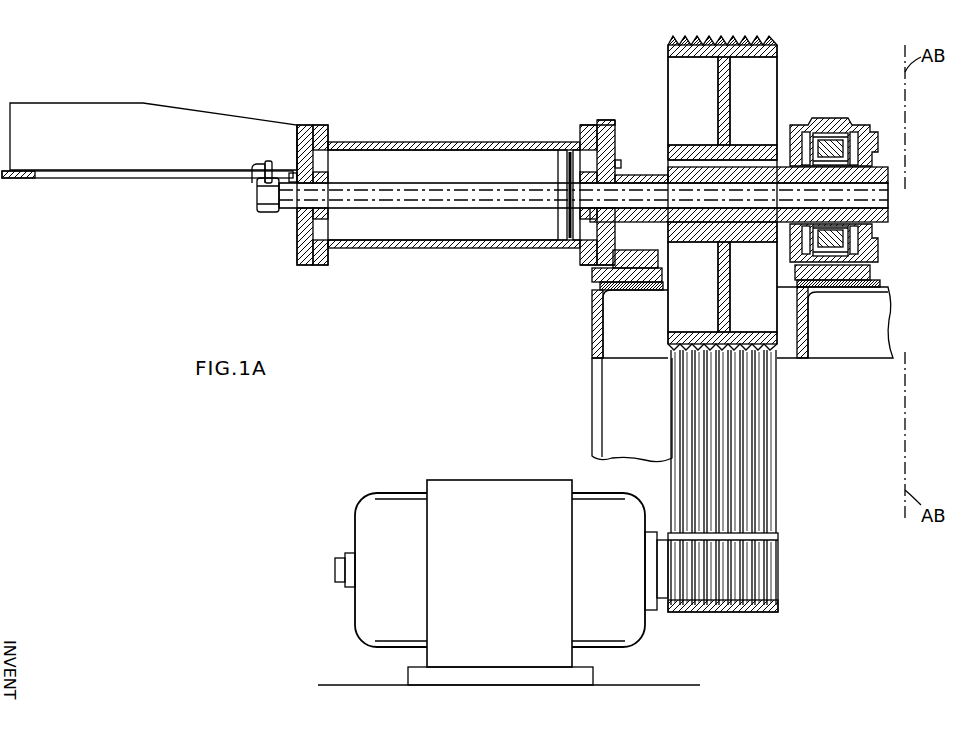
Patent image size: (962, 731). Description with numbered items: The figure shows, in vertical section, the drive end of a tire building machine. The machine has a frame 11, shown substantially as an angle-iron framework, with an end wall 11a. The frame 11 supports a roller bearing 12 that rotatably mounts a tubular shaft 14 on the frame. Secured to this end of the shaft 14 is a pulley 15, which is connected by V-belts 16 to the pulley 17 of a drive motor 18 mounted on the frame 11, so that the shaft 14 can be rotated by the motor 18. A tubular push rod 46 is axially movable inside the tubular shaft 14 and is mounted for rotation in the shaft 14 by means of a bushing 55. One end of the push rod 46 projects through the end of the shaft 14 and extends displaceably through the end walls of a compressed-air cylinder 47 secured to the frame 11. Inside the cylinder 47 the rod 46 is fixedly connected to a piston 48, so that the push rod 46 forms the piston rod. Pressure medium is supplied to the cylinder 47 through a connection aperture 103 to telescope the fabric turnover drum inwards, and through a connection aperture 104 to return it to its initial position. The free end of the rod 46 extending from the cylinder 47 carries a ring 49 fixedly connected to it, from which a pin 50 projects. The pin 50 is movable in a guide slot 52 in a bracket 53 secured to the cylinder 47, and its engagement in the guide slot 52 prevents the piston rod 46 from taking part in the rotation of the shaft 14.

The frame 11 is at (827, 348).
The end wall 11a is at (592, 390).
The roller bearing 12 is at (851, 123).
The tubular shaft 14 is at (884, 167).
The pulley 15 is at (680, 90).
The V-belts 16 is at (778, 452).
The pulley 17 is at (778, 563).
The drive motor 18 is at (453, 497).
The tubular push rod 46 is at (289, 212).
The compressed-air cylinder 47 is at (496, 124).
The piston 48 is at (556, 158).
The ring 49 is at (258, 210).
The pin 50 is at (251, 176).
The guide slot 52 is at (143, 177).
The bracket 53 is at (171, 88).
The bushing 55 is at (647, 233).
The connection aperture 103 is at (615, 164).
The connection aperture 104 is at (292, 237).